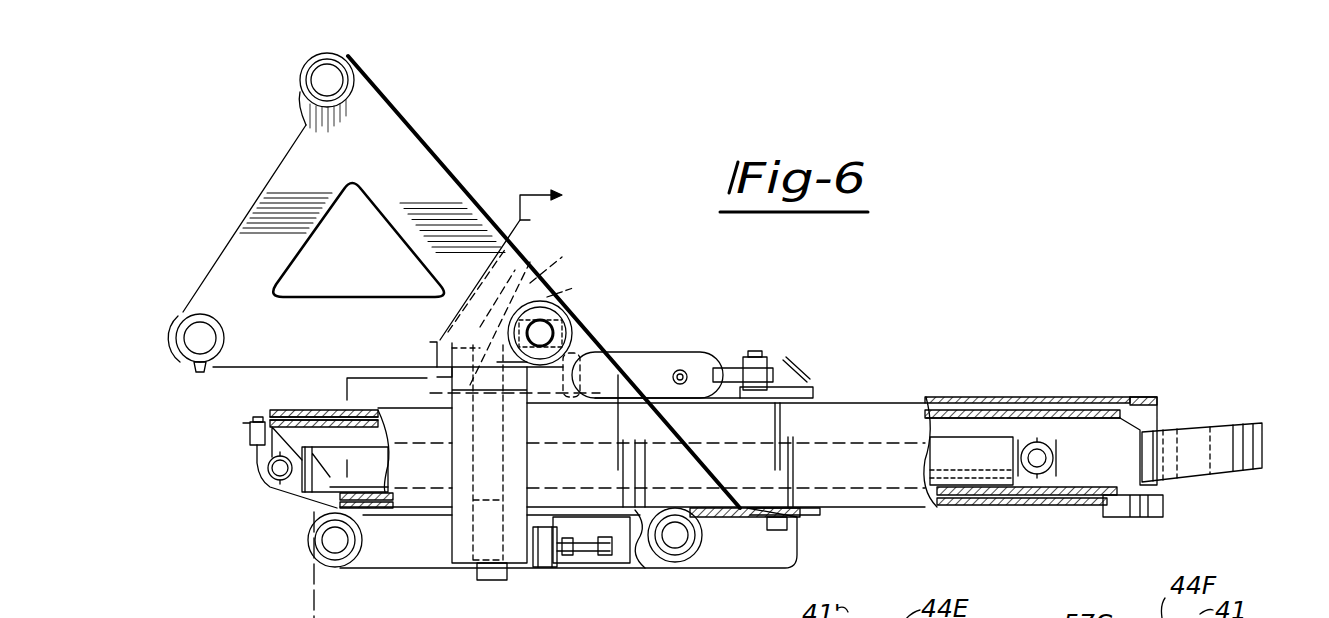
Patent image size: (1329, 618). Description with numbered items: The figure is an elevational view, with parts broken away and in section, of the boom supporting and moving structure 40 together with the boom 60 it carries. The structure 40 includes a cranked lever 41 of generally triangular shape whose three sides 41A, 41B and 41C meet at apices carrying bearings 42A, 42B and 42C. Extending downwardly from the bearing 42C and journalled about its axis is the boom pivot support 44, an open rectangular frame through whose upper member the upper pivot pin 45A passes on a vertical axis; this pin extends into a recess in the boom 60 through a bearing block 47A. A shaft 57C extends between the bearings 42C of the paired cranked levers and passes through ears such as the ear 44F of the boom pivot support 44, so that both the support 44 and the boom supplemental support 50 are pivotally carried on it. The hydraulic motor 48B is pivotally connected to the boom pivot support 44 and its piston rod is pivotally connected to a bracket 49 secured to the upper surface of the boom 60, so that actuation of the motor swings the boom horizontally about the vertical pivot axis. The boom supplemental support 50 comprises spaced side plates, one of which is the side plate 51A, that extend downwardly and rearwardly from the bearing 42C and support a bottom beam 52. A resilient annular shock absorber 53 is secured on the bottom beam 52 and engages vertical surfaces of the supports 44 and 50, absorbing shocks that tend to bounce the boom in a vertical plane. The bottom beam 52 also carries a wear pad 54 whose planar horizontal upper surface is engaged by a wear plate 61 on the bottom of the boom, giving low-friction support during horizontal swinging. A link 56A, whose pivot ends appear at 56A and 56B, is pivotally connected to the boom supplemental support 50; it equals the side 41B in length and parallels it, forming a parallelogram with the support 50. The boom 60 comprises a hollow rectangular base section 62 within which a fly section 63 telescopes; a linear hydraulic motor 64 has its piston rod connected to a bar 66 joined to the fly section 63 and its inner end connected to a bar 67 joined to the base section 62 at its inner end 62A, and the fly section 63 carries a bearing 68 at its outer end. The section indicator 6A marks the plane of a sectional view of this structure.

The boom supporting and moving structure 40 is at (452, 128).
The cranked lever 41 is at (388, 116).
The side of cranked lever 41A is at (248, 225).
The side of cranked lever 41B is at (327, 308).
The side of cranked lever 41C is at (455, 182).
The bearing 42A is at (345, 70).
The bearing 42B is at (180, 325).
The bearing 42C is at (572, 340).
The boom pivot support 44 is at (470, 578).
The ear 44F is at (518, 255).
The upper pivot pin 45A is at (540, 282).
The bearing block 47A is at (440, 400).
The hydraulic motor 48B is at (660, 352).
The bracket 49 is at (795, 372).
The boom supplemental support 50 is at (720, 575).
The side plate 51A is at (588, 350).
The bottom beam 52 is at (613, 568).
The shock absorber 53 is at (545, 575).
The wear pad 54 is at (805, 520).
The link 56A is at (645, 570).
The pivot eye 56B is at (393, 555).
The shaft 57C is at (586, 338).
The boom 60 is at (968, 358).
The wear plate 61 is at (815, 515).
The base section 62 is at (1022, 397).
The inner end of base section 62A is at (258, 470).
The fly section 63 is at (1075, 408).
The linear hydraulic motor 64 is at (990, 464).
The bar 66 is at (1052, 462).
The bar 67 is at (268, 485).
The bearing 68 is at (1245, 425).
The section line 6A is at (472, 395).